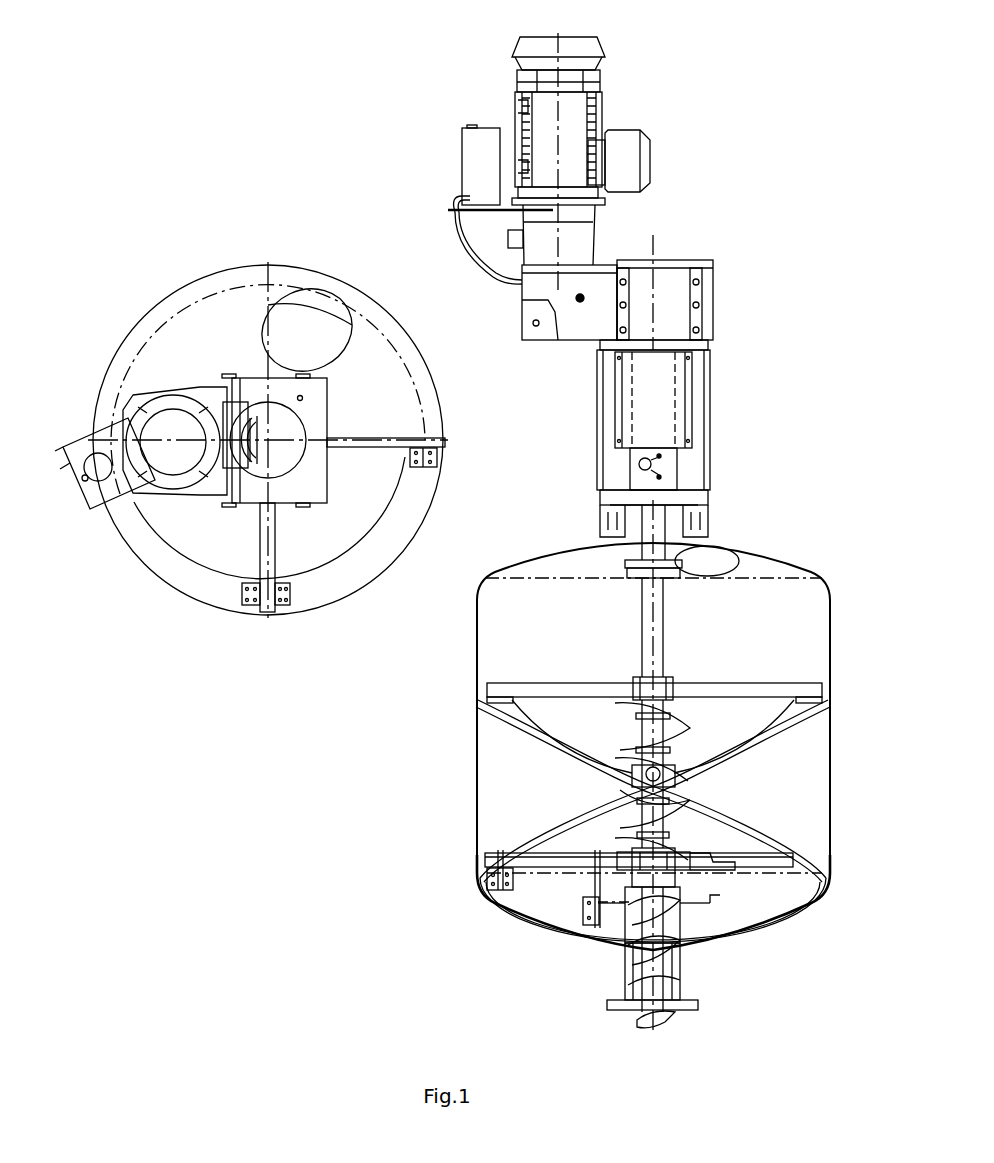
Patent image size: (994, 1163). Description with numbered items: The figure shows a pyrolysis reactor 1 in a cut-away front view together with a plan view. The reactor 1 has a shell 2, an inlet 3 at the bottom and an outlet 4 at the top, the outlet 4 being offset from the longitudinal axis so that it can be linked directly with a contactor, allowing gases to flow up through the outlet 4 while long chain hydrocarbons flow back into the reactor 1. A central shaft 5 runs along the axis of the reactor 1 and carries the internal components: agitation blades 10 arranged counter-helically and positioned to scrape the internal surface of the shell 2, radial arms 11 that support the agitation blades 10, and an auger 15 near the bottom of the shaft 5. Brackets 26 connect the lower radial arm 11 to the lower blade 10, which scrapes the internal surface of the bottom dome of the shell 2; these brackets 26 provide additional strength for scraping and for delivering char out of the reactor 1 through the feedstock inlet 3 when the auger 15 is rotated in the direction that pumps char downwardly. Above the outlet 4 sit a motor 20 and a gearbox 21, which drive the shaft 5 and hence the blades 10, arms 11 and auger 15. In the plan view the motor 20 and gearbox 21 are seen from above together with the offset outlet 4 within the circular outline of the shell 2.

The pyrolysis reactor 1 is at (170, 242).
The shell 2 is at (472, 650).
The inlet 3 is at (612, 977).
The outlet 4 is at (715, 562).
The central shaft 5 is at (660, 637).
The agitation blades 10 is at (512, 738).
The radial arms 11 is at (563, 684).
The auger 15 is at (605, 832).
The motor 20 is at (652, 145).
The gearbox 21 is at (712, 412).
The brackets 26 is at (590, 880).